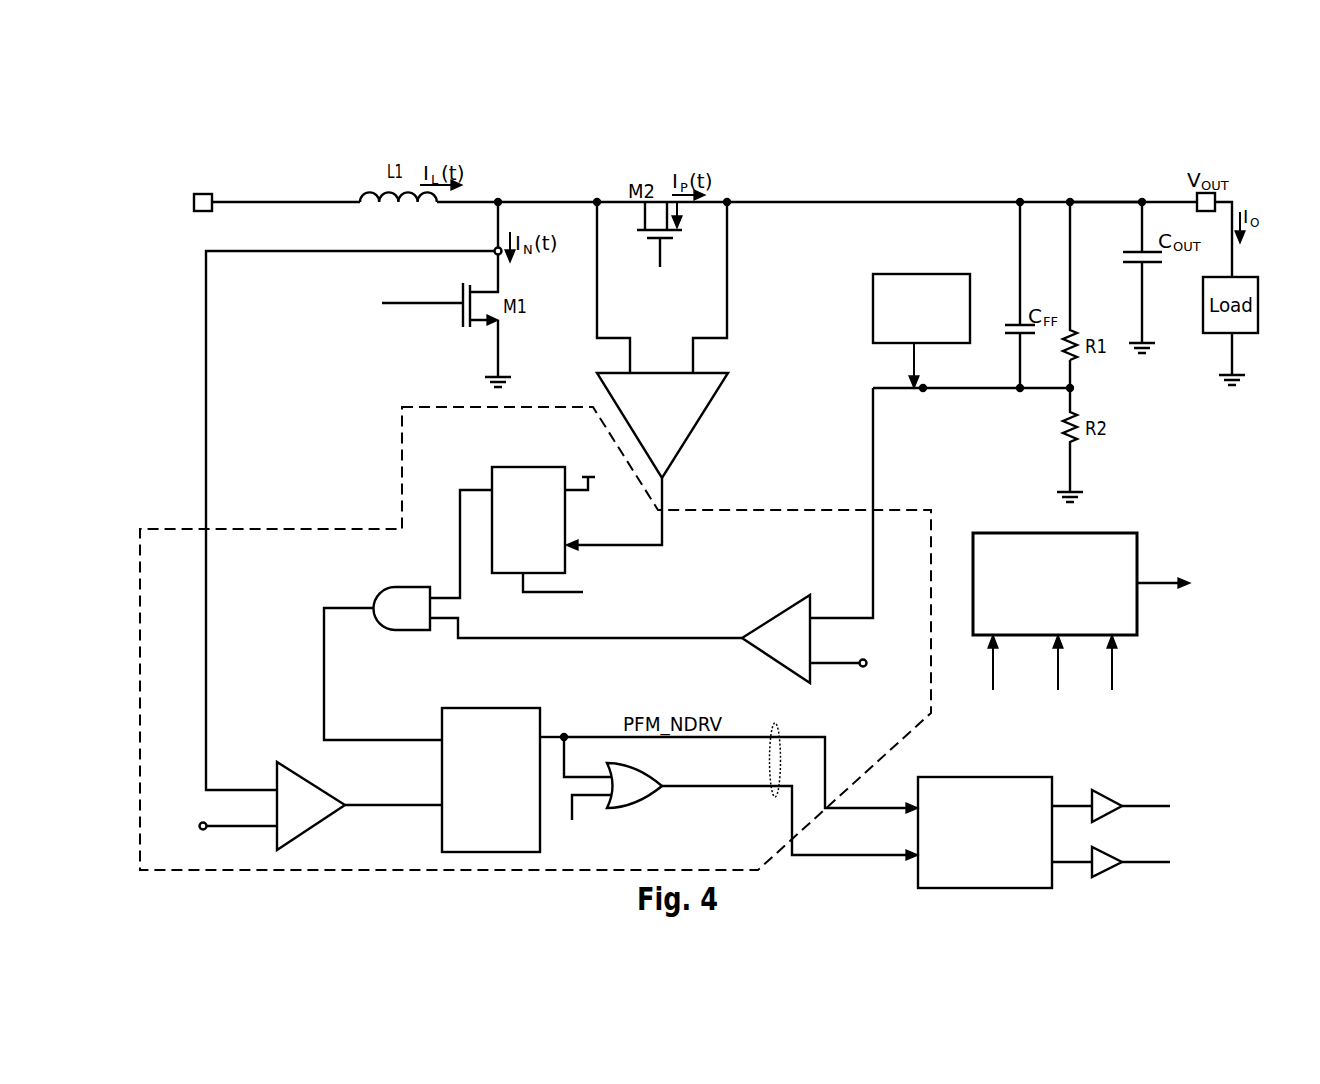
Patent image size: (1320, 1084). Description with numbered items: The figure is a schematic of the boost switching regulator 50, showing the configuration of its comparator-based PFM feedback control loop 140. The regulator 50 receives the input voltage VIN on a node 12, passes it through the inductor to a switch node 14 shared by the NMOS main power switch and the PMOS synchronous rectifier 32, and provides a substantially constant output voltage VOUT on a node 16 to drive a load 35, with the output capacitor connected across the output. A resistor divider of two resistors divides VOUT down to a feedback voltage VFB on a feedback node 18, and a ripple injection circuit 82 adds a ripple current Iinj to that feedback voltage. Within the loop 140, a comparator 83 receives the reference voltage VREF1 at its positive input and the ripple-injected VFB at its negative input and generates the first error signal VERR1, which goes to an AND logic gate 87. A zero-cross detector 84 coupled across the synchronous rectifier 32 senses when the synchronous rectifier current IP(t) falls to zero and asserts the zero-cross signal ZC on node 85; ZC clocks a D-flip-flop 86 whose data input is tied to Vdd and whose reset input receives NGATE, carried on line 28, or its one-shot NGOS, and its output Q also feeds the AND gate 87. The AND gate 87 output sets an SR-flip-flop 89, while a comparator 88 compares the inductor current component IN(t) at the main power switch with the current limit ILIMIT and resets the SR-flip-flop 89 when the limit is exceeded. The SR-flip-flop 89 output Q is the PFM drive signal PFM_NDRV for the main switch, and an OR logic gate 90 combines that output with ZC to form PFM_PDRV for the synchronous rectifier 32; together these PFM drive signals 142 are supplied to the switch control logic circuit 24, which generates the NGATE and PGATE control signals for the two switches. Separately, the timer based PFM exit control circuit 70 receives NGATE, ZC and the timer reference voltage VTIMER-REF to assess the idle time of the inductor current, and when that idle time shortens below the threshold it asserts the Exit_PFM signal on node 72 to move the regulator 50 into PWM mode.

The input node 12 is at (203, 192).
The switch node 14 is at (496, 208).
The output node 16 is at (1102, 200).
The feedback node 18 is at (1004, 391).
The switch control logic circuit 24 is at (1073, 832).
The NGATE signal line 28 is at (405, 306).
The high side switch M2 32 is at (664, 250).
The load 35 is at (1210, 336).
The boost switching regulator 50 is at (1052, 128).
The timer based PFM exit control circuit 70 is at (1107, 533).
The Exit_PFM signal node 72 is at (1166, 579).
The ripple injection circuit 82 is at (909, 274).
The comparator 83 is at (754, 647).
The zero-cross detector 84 is at (703, 423).
The zero-cross signal node 85 is at (664, 537).
The D-flip-flop 86 is at (524, 467).
The AND logic gate 87 is at (533, 615).
The comparator 88 is at (309, 828).
The SR-flip-flop 89 is at (500, 708).
The OR logic gate 90 is at (740, 798).
The PFM feedback control loop 140 is at (327, 527).
The PFM drive signals 142 is at (774, 723).